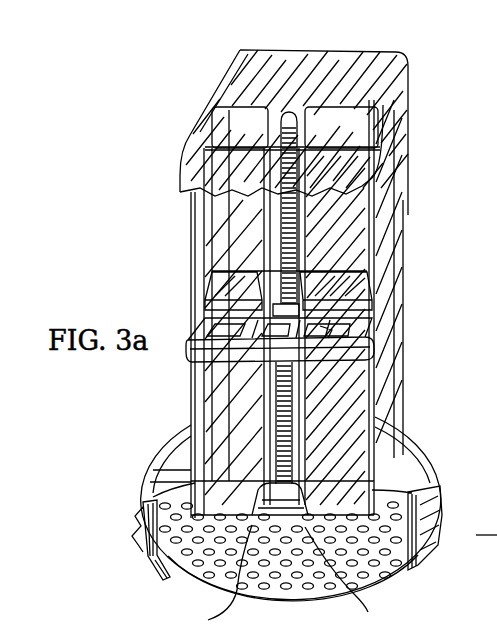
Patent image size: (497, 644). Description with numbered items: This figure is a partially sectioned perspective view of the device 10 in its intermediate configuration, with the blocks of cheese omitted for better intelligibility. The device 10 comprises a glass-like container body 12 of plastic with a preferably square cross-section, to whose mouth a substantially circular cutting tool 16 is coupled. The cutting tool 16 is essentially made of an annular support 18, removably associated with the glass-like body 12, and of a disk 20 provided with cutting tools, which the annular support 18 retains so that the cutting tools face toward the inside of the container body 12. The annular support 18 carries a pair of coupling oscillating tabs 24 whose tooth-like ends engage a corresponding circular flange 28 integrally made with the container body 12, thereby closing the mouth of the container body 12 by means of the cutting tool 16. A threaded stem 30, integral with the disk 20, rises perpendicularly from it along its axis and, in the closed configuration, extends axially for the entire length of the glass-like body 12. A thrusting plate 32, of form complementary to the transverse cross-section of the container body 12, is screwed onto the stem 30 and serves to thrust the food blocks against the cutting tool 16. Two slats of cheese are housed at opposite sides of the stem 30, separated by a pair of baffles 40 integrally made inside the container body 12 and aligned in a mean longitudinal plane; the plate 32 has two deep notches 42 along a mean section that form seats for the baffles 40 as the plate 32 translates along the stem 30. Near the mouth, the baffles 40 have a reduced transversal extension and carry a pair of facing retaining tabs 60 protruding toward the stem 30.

The device 10 is at (192, 90).
The glass-like container body 12 is at (362, 72).
The cutting tool 16 is at (157, 576).
The annular support 18 is at (165, 460).
The disk 20 is at (297, 588).
The coupling oscillating tabs 24 is at (148, 484).
The circular flange 28 is at (412, 457).
The threaded stem 30 is at (305, 218).
The thrusting plate 32 is at (345, 380).
The baffles 40 is at (357, 247).
The notches 42 is at (350, 310).
The retaining tabs 60 is at (285, 580).